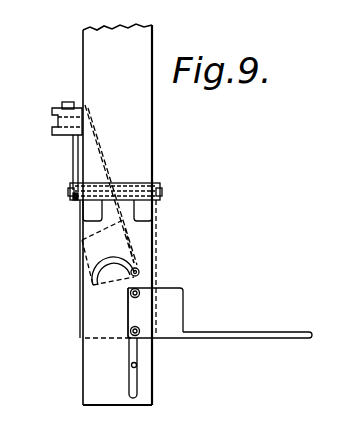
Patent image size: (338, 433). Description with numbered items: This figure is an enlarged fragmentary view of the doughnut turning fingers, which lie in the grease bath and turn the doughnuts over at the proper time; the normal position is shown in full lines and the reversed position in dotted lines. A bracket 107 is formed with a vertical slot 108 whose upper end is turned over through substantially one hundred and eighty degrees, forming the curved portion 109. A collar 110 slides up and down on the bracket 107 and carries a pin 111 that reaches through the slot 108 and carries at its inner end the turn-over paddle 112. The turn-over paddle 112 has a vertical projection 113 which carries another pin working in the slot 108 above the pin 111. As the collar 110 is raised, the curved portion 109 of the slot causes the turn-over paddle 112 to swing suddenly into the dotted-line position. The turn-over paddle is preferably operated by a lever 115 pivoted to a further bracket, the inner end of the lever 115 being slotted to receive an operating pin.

The bracket 107 is at (145, 155).
The vertical slot 108 is at (137, 366).
The curved portion of the slot 109 is at (130, 263).
The collar 110 is at (155, 267).
The pin 111 is at (140, 330).
The turn-over paddle 112 is at (250, 341).
The vertical projection 113 is at (173, 297).
The lever 115 is at (65, 102).